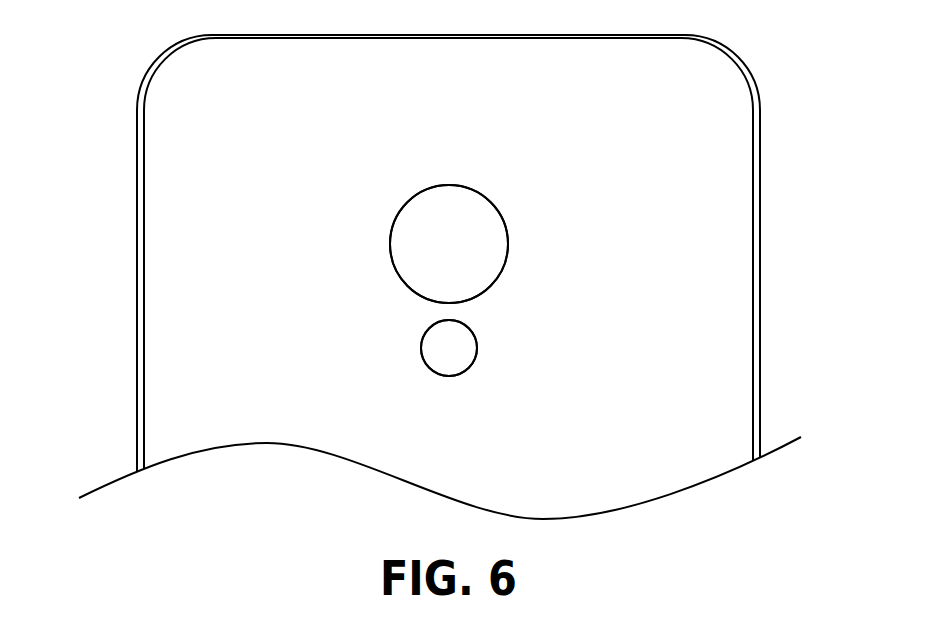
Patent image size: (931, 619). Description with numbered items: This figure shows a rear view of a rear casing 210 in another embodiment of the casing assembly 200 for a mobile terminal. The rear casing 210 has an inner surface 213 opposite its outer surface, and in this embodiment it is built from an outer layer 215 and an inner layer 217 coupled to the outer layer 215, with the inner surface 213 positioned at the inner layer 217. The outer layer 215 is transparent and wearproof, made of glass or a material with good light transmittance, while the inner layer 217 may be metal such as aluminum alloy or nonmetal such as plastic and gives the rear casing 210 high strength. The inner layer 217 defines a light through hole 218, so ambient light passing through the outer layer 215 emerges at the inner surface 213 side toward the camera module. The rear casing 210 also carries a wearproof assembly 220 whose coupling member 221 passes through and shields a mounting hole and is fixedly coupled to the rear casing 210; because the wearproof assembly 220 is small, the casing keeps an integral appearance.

The casing assembly 200 is at (136, 143).
The rear casing 210 is at (168, 248).
The inner surface 213 is at (172, 433).
The outer layer 215 is at (443, 232).
The light through hole 218 is at (460, 270).
The inner layer 217 is at (697, 295).
The wearproof assembly 220 is at (445, 350).
The coupling member 221 is at (443, 365).